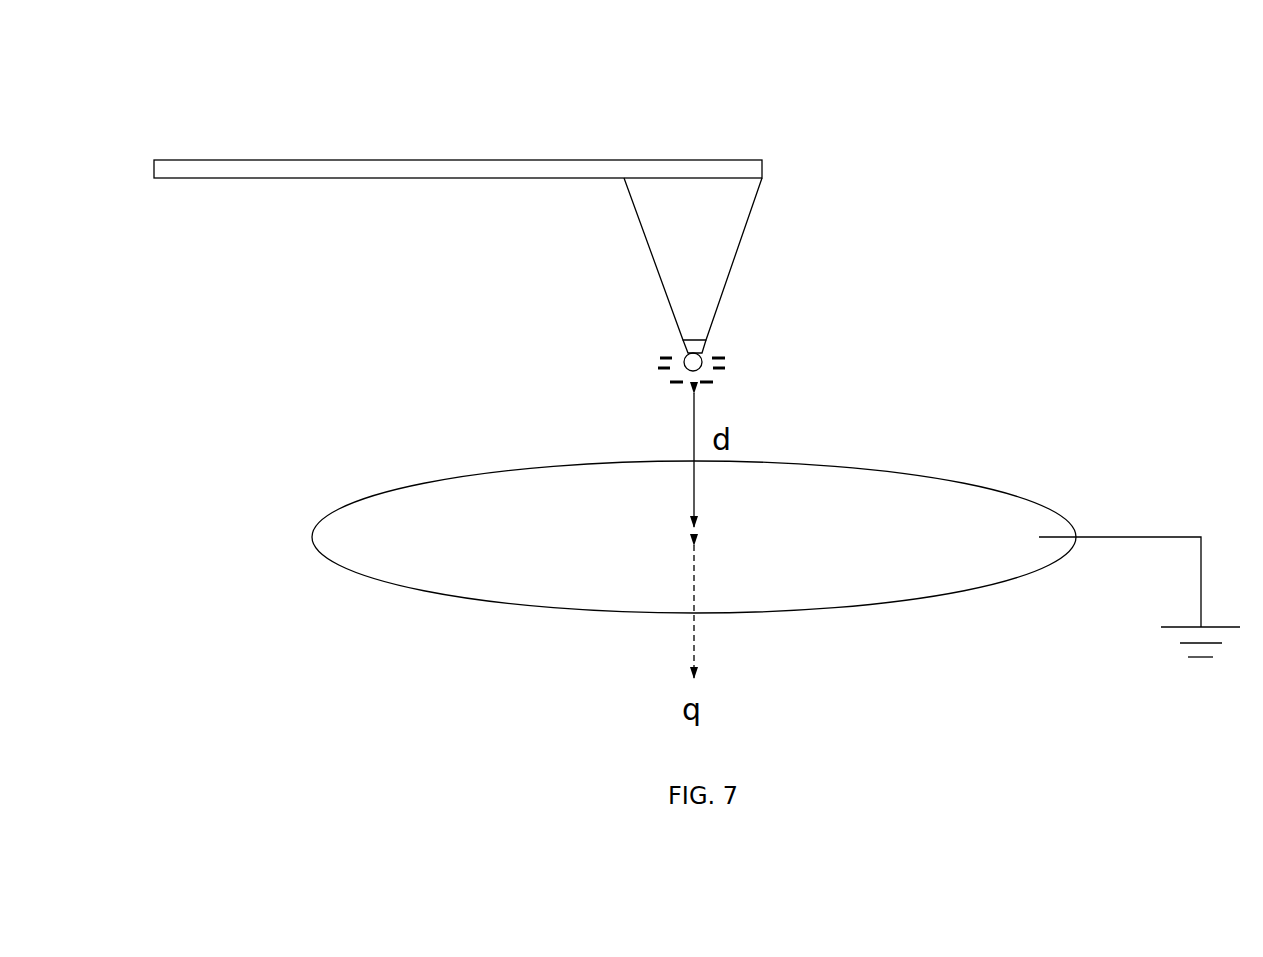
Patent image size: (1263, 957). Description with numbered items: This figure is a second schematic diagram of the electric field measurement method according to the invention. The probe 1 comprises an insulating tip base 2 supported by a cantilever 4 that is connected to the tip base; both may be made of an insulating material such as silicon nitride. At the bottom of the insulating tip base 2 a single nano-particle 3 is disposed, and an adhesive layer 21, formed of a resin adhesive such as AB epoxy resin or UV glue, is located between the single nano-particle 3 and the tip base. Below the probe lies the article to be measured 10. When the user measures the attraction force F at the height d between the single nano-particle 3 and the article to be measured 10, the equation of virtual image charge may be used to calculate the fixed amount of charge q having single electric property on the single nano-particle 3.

The probe 1 is at (306, 85).
The insulating tip base 2 is at (818, 203).
The single nano-particle 3 is at (678, 360).
The cantilever 4 is at (697, 160).
The article to be measured 10 is at (1005, 492).
The adhesive layer 21 is at (703, 348).